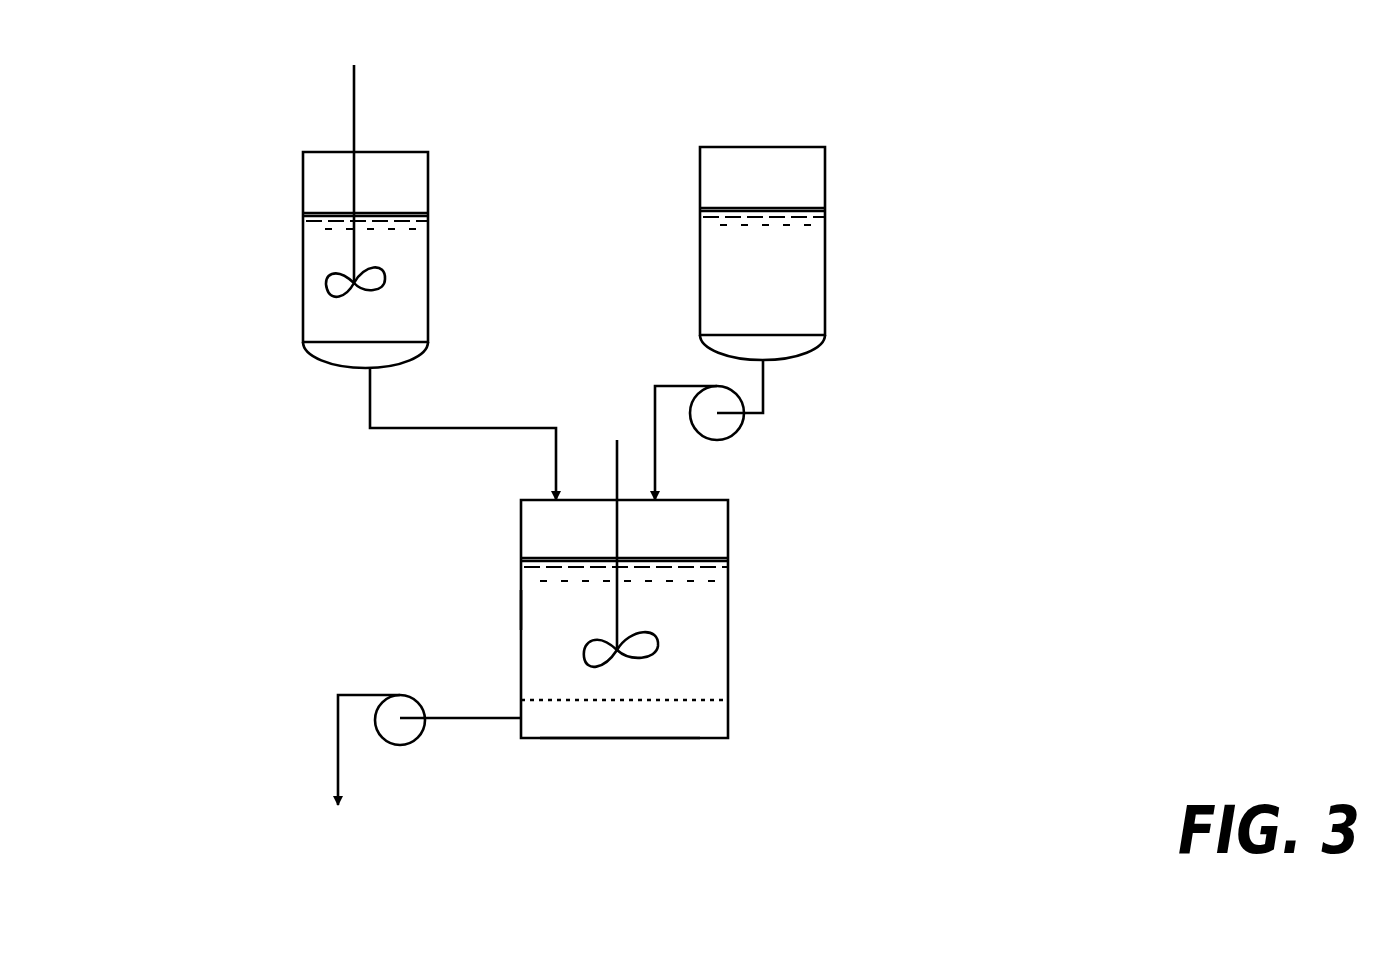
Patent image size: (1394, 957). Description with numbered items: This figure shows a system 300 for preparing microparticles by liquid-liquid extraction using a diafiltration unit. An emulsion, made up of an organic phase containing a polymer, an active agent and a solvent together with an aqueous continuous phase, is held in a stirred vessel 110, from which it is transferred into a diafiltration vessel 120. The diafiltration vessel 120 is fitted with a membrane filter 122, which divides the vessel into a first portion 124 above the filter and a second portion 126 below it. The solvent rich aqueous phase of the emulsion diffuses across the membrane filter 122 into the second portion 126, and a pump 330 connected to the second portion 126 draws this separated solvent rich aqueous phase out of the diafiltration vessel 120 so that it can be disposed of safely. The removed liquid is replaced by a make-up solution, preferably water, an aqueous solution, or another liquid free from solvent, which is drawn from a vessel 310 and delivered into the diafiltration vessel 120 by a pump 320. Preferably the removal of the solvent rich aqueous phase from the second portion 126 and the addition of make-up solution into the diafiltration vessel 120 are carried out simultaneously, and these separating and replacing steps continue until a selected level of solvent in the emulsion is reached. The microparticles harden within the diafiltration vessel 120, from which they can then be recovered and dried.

The system 300 is at (1155, 142).
The vessel 110 is at (303, 323).
The vessel 310 is at (825, 165).
The pump 320 is at (724, 420).
The diafiltration vessel 120 is at (521, 519).
The membrane filter 122 is at (710, 702).
The first portion 124 is at (533, 605).
The second portion 126 is at (600, 725).
The pump 330 is at (399, 730).